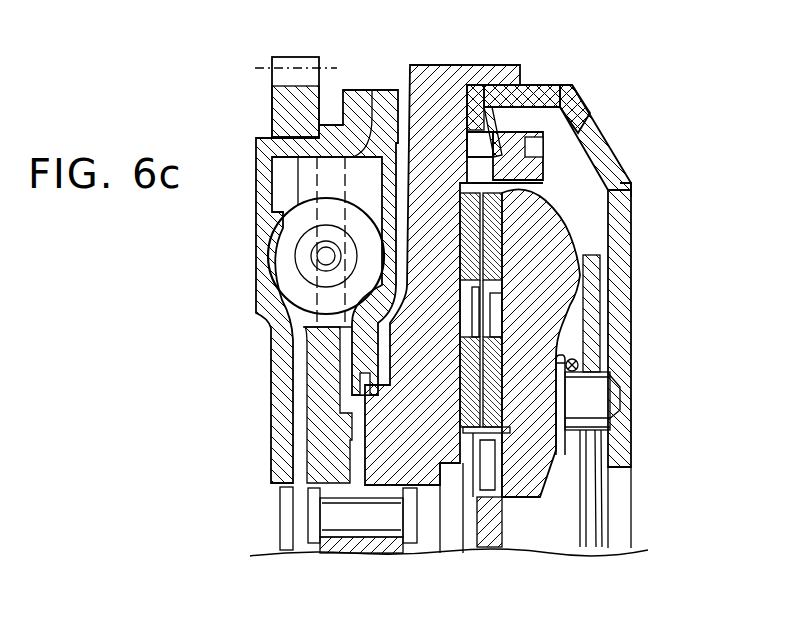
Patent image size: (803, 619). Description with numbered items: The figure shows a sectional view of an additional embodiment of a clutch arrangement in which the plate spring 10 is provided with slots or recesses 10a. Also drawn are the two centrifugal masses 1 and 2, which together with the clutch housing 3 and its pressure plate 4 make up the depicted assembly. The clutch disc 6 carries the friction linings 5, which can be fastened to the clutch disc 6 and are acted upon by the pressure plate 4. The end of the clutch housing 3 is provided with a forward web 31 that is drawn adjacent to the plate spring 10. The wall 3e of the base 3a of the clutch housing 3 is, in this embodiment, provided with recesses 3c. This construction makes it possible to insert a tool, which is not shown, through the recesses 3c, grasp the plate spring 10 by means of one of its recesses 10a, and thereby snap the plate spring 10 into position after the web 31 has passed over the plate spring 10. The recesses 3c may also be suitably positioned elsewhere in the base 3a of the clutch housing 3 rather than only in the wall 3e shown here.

The centrifugal mass 1 is at (442, 95).
The centrifugal mass 2 is at (357, 97).
The clutch housing 3 is at (600, 148).
The base of the clutch housing 3a is at (620, 295).
The recesses 3c is at (580, 110).
The wall of the base 3e is at (632, 188).
The pressure plate 4 is at (550, 252).
The friction linings 5 is at (560, 332).
The clutch disc 6 is at (487, 541).
The plate spring 10 is at (490, 143).
The recesses of the plate spring 10a is at (515, 105).
The forward web 31 is at (482, 120).